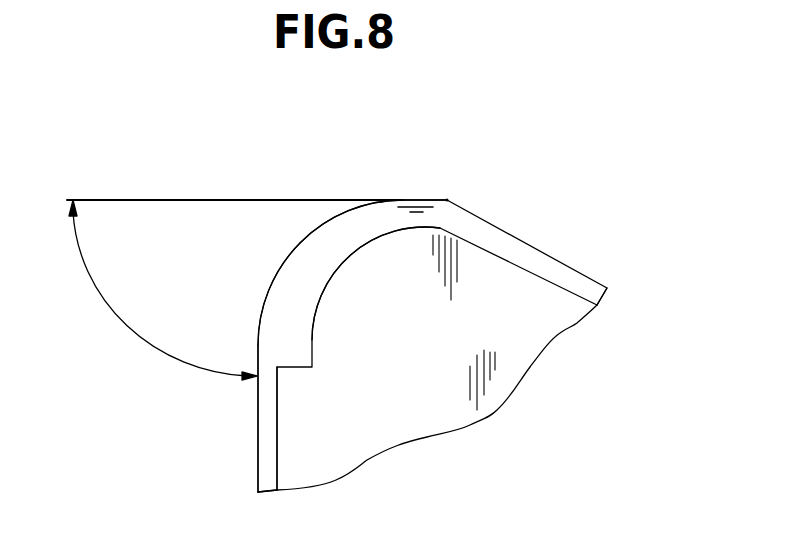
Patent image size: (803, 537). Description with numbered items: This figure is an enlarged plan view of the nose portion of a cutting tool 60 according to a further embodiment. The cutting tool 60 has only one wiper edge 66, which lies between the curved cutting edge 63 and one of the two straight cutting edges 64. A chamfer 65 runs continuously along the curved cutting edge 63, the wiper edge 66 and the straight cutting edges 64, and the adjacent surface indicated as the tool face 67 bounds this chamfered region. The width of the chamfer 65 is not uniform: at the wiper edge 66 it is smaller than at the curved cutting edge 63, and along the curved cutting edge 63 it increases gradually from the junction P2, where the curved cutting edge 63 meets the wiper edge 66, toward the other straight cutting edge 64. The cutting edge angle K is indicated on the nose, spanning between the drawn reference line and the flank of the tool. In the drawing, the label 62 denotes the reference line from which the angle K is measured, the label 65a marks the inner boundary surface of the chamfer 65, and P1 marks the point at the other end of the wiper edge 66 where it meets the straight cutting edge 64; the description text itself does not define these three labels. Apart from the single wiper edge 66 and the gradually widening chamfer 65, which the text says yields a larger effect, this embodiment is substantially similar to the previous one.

The cutting tool 60 is at (413, 428).
The reference plane 62 is at (305, 197).
The curved cutting edge 63 is at (308, 236).
The straight cutting edge 64 is at (258, 472).
The chamfer 65 is at (292, 292).
The inner curved surface 65a is at (330, 283).
The wiper edge 66 is at (414, 199).
The tool face 67 is at (315, 450).
The first boundary point P1 is at (448, 199).
The junction P2 is at (381, 199).
The cutting edge angle K is at (163, 290).